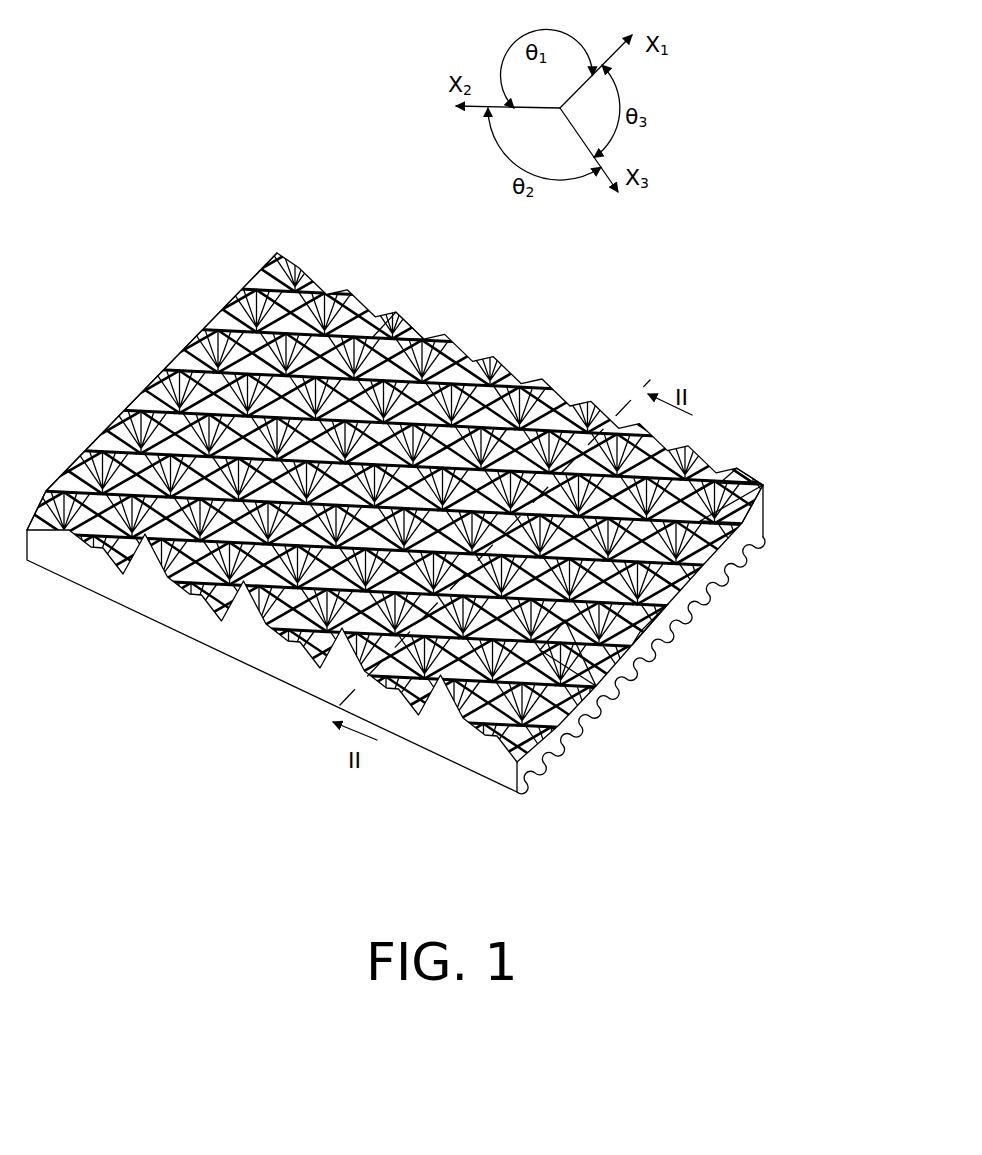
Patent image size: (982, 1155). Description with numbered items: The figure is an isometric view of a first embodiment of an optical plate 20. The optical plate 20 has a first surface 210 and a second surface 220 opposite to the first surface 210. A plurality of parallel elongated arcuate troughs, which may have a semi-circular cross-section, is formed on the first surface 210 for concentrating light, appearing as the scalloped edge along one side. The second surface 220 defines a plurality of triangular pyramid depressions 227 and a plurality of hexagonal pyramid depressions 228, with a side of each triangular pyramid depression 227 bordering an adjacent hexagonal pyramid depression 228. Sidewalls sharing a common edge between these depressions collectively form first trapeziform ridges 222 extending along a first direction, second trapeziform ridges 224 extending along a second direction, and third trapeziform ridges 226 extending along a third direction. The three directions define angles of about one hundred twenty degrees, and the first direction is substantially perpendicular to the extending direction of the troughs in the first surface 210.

The optical plate 20 is at (236, 269).
The first surface 210 is at (713, 598).
The second surface 220 is at (202, 322).
The first trapeziform ridges 222 is at (424, 336).
The second trapeziform ridges 224 is at (721, 470).
The third trapeziform ridges 226 is at (721, 513).
The triangular pyramid depressions 227 is at (565, 620).
The hexagonal pyramid depressions 228 is at (641, 633).